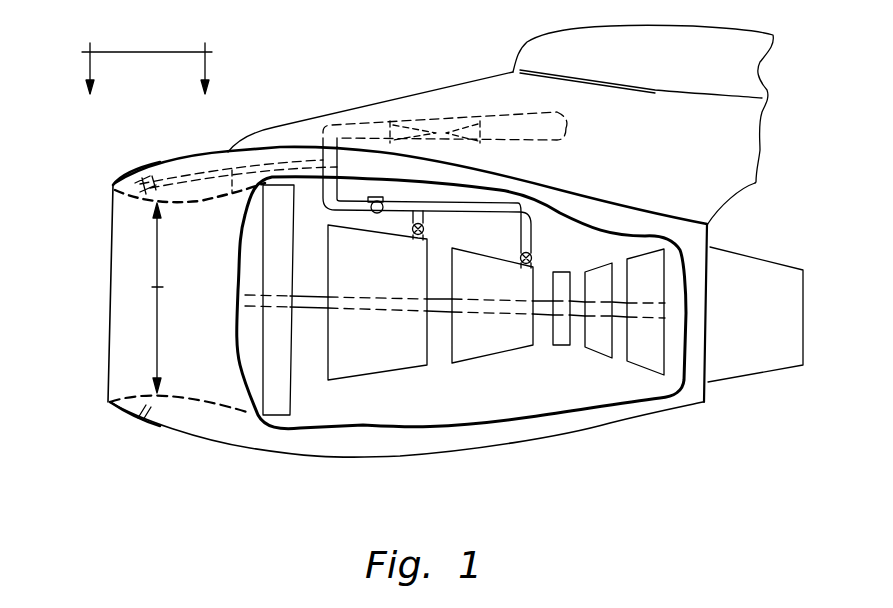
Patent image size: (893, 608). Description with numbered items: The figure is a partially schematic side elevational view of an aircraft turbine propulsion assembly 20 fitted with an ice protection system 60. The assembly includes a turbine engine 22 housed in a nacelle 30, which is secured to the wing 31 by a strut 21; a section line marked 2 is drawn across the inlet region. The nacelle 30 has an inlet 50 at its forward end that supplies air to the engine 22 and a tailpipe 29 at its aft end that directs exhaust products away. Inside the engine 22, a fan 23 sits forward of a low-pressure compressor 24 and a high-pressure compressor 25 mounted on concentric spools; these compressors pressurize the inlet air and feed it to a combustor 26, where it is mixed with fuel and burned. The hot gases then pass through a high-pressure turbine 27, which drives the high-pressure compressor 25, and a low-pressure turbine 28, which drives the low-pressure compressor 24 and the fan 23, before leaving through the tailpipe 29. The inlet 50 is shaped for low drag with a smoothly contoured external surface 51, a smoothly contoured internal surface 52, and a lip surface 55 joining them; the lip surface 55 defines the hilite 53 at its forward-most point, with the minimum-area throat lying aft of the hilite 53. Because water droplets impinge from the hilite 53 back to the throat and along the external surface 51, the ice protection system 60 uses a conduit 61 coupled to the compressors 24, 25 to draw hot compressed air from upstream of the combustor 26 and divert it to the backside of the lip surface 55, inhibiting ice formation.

The section line 2- 2 is at (147, 64).
The aircraft turbine propulsion assembly 20 is at (271, 94).
The strut 21 is at (418, 95).
The turbine engine 22 is at (498, 394).
The fan 23 is at (277, 427).
The low-pressure compressor 24 is at (355, 382).
The high-pressure compressor 25 is at (467, 368).
The combustor 26 is at (560, 347).
The high-pressure turbine 27 is at (600, 360).
The low-pressure turbine 28 is at (647, 377).
The tailpipe 29 is at (748, 382).
The nacelle 30 is at (299, 461).
The wing 31 is at (527, 42).
The inlet 50 is at (97, 347).
The external surface 51 is at (294, 147).
The internal surface 52 is at (138, 203).
The hilite 53 is at (113, 184).
The lip surface 55 is at (117, 182).
The ice protection system 60 is at (176, 162).
The conduit 61 is at (230, 193).